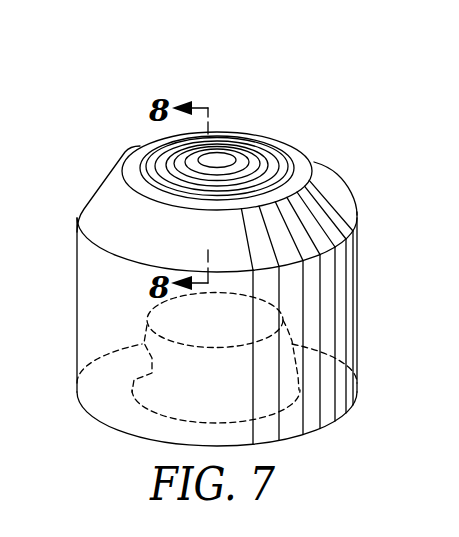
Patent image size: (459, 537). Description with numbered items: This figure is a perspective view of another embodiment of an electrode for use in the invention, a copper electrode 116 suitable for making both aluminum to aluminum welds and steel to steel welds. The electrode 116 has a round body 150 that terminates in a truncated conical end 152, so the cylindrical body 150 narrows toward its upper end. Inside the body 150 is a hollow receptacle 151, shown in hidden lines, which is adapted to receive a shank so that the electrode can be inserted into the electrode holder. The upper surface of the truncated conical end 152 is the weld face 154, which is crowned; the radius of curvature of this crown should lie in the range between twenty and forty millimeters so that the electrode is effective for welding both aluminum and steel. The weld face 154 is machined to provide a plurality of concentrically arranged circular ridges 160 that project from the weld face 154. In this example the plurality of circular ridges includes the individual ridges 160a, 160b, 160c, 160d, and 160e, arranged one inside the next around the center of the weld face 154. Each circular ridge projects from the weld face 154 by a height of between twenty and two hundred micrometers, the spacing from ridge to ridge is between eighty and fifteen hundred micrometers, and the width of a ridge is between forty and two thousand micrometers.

The copper electrode 116 is at (233, 229).
The round body 150 is at (335, 328).
The hollow receptacle 151 is at (142, 345).
The truncated conical end 152 is at (327, 194).
The weld face 154 is at (298, 160).
The concentrically arranged circular ridges 160 is at (217, 106).
The circular ridge 160a is at (232, 152).
The circular ridge 160b is at (243, 148).
The circular ridge 160c is at (252, 147).
The circular ridge 160d is at (263, 145).
The circular ridge 160e is at (278, 148).